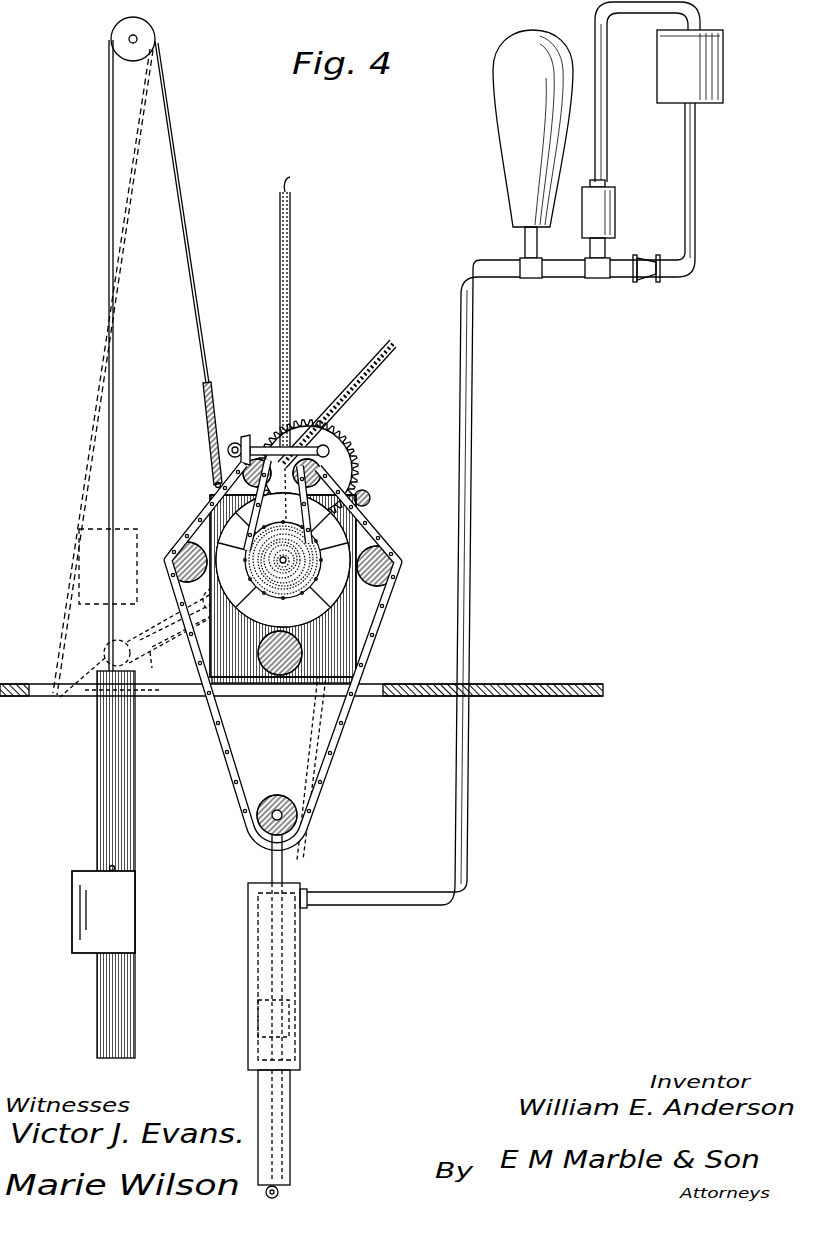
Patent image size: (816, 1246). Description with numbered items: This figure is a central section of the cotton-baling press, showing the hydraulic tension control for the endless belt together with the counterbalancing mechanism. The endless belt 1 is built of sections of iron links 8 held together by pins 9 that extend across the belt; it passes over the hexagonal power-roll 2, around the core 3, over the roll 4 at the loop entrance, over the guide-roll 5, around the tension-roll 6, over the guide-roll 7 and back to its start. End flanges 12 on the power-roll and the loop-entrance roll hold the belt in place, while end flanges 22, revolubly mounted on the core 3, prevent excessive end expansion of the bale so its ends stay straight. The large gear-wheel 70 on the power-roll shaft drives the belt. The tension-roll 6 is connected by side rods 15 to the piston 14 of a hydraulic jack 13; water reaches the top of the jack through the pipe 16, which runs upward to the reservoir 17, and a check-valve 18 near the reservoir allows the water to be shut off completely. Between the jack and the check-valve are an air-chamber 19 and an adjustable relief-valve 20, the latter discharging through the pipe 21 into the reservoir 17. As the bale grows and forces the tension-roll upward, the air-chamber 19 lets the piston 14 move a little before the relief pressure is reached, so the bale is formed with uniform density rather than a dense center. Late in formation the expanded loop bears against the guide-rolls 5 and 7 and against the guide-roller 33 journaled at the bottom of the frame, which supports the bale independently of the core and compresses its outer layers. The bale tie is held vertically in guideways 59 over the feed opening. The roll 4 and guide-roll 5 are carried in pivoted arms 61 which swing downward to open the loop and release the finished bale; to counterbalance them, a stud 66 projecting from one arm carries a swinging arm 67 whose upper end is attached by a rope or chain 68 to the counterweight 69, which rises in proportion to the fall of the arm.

The endless belt 1 is at (196, 528).
The power-roll 2 is at (322, 465).
The core 3 is at (300, 556).
The roll 4 is at (258, 446).
The guide-roll 5 is at (198, 548).
The tension-roll 6 is at (273, 798).
The guide-roll 7 is at (398, 563).
The links 8 is at (222, 735).
The pins 9 is at (375, 630).
The end flanges 12 is at (358, 481).
The hydraulic jack 13 is at (296, 950).
The piston 14 is at (282, 1092).
The side rods 15 is at (284, 872).
The pipe 16 is at (466, 826).
The reservoir 17 is at (723, 54).
The check-valve 18 is at (646, 282).
The air-chamber 19 is at (510, 204).
The relief-valve 20 is at (616, 222).
The pipe 21 is at (608, 150).
The end flanges 22 is at (283, 585).
The guide-roller 33 is at (284, 684).
The guideways 59 is at (278, 300).
The pivoted arms 61 is at (185, 640).
The stud 66 is at (250, 486).
The swinging arm 67 is at (213, 460).
The rope or chain 68 is at (206, 355).
The counterweight 69 is at (88, 864).
The large gear-wheel 70 is at (345, 440).